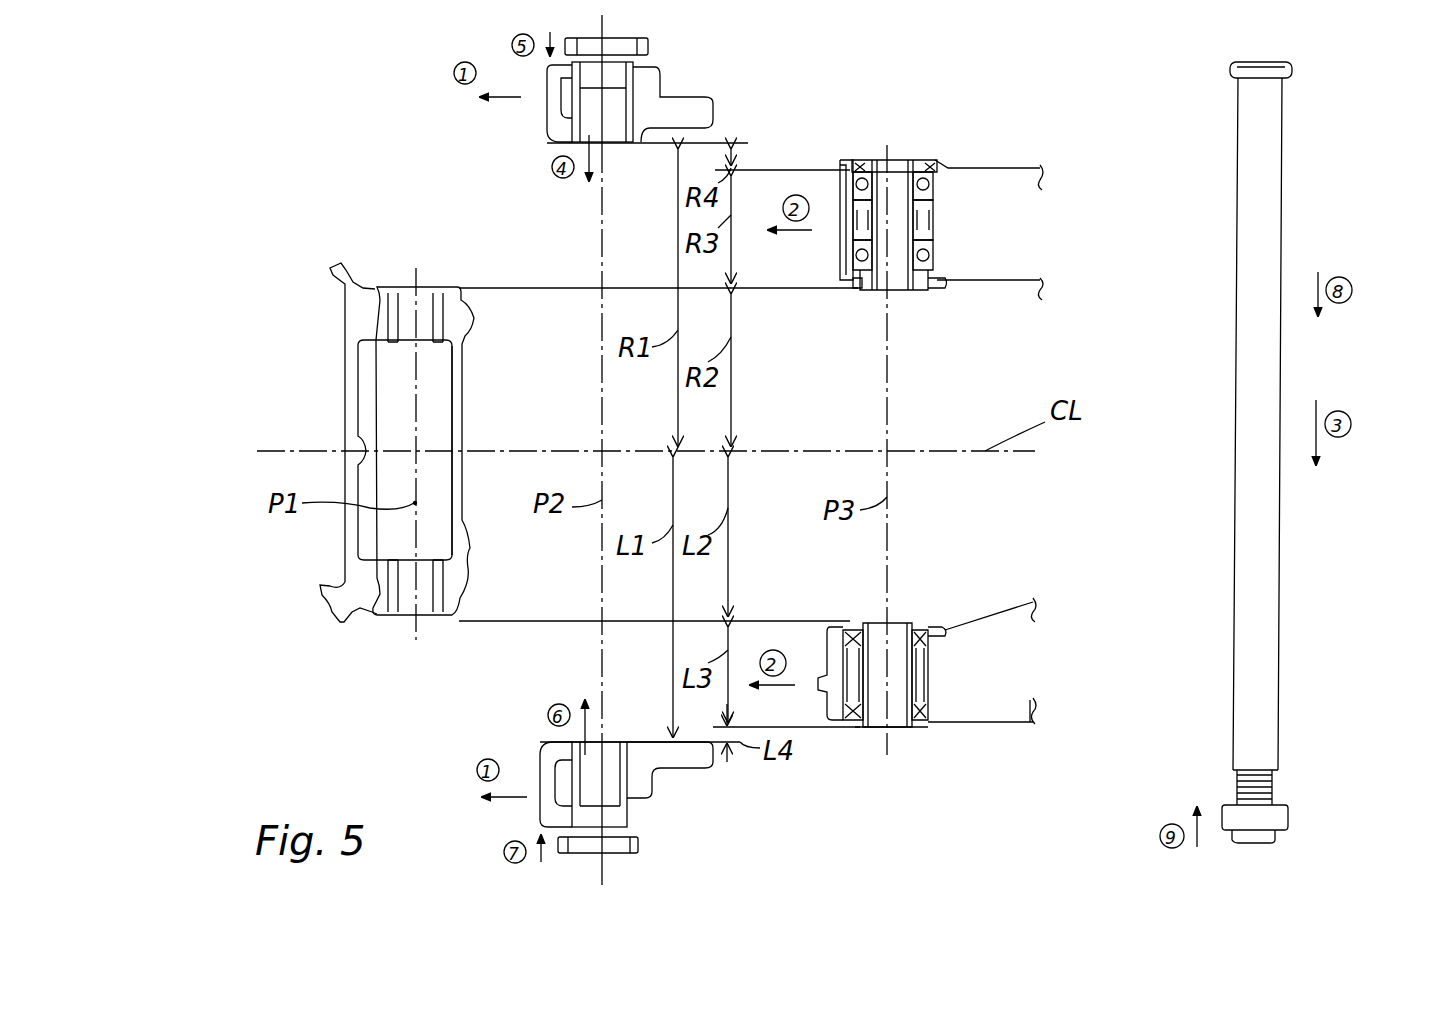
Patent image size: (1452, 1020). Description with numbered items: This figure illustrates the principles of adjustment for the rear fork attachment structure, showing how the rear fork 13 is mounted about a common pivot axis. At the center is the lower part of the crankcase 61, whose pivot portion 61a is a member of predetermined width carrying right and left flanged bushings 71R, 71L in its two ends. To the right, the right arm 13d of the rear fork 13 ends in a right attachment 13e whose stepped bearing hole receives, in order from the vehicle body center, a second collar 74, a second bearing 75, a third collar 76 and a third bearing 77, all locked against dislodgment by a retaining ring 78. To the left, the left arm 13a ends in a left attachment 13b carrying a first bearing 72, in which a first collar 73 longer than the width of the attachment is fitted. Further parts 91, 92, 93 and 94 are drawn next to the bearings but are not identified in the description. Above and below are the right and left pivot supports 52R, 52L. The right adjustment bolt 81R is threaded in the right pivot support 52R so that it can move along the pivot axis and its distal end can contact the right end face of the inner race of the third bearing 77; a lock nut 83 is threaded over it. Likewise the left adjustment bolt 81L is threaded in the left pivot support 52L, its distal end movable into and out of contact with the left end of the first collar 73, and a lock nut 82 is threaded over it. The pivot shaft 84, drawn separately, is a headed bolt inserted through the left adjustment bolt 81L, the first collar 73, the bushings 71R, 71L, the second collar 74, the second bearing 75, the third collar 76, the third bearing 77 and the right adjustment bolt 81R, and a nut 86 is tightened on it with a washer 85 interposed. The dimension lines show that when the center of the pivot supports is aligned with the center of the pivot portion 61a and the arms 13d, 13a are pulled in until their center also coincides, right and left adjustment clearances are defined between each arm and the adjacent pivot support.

The crankcase 61 is at (328, 619).
The pivot portion 61a is at (460, 392).
The right flanged bushing 71R is at (405, 298).
The left flanged bushing 71L is at (403, 608).
The lock nut 83 is at (648, 47).
The right adjustment bolt 81R is at (633, 95).
The right pivot support 52R is at (700, 114).
The lock nut 82 is at (640, 847).
The left adjustment bolt 81L is at (633, 797).
The left pivot support 52L is at (700, 788).
The right attachment 13e is at (852, 160).
The seal 94 is at (862, 170).
The retaining ring 78 is at (950, 163).
The right arm 13d is at (1030, 168).
The third bearing 77 is at (936, 183).
The third collar 76 is at (936, 210).
The second bearing 75 is at (936, 255).
The seal 93 is at (942, 285).
The second collar 74 is at (920, 292).
The first collar 73 is at (912, 630).
The seal 92 is at (945, 632).
The first bearing 72 is at (920, 683).
The rear fork 13 is at (1043, 712).
The left arm 13a is at (1010, 718).
The seal 91 is at (918, 728).
The left attachment 13b is at (836, 722).
The pivot shaft 84 is at (1272, 615).
The washer 85 is at (1290, 806).
The nut 86 is at (1288, 818).